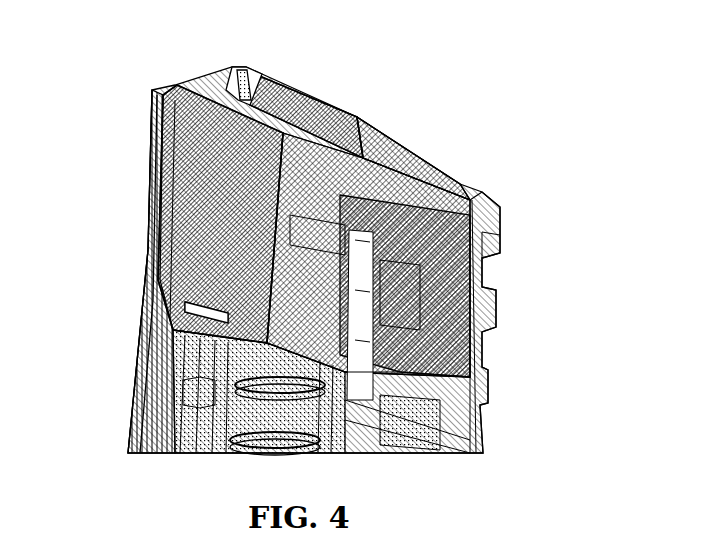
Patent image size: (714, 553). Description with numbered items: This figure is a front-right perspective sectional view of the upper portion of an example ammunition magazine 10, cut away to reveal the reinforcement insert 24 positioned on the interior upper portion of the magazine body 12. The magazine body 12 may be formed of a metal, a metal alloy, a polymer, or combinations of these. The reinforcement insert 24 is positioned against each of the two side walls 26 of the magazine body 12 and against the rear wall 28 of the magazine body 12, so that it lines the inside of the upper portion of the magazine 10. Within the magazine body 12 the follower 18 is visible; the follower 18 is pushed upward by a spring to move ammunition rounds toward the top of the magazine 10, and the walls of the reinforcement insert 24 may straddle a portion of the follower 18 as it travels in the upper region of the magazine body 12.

The ammunition magazine 10 is at (541, 232).
The magazine body 12 is at (163, 405).
The follower 18 is at (433, 200).
The reinforcement insert 24 is at (170, 97).
The side walls 26 is at (373, 135).
The rear wall 28 is at (146, 193).